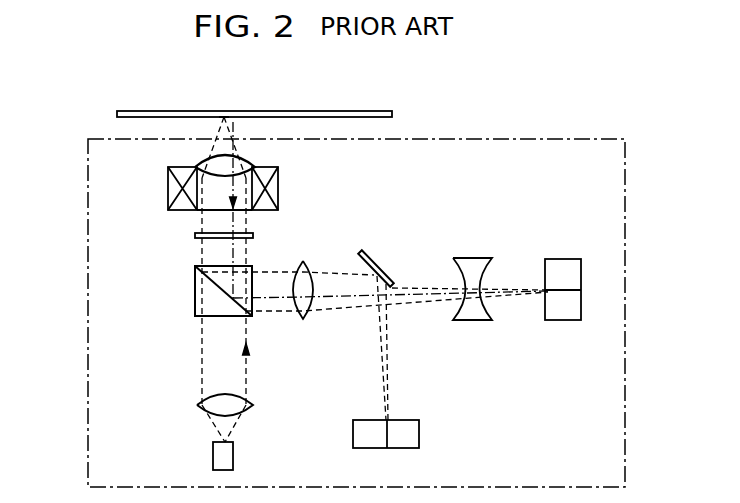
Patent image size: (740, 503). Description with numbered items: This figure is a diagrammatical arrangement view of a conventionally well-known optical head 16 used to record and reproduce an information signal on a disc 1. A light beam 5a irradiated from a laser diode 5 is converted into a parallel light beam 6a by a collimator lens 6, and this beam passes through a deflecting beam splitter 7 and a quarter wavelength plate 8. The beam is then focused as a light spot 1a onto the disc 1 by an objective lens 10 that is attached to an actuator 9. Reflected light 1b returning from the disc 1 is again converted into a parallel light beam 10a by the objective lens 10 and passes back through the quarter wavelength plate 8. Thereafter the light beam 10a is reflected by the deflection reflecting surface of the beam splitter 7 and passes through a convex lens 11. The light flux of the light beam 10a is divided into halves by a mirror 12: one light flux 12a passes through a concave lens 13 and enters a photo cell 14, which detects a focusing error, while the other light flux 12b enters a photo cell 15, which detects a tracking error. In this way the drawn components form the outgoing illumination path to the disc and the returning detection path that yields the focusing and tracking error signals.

The disc 1 is at (117, 115).
The light spot 1a is at (224, 117).
The reflected light 1b is at (226, 118).
The laser diode 5 is at (213, 457).
The light beam 5a is at (236, 420).
The collimator lens 6 is at (197, 405).
The parallel light beam 6a is at (250, 366).
The deflecting beam splitter 7 is at (195, 292).
The ¼ wavelength plate 8 is at (195, 236).
The actuator 9 is at (280, 193).
The objective lens 10 is at (200, 164).
The parallel light beam 10a is at (237, 195).
The convex lens 11 is at (303, 320).
The mirror 12 is at (374, 258).
The light flux 12a is at (428, 297).
The light flux 12b is at (385, 362).
The concave lens 13 is at (472, 258).
The photo cell 14 is at (562, 259).
The photo cell 15 is at (420, 437).
The optical head 16 is at (88, 175).